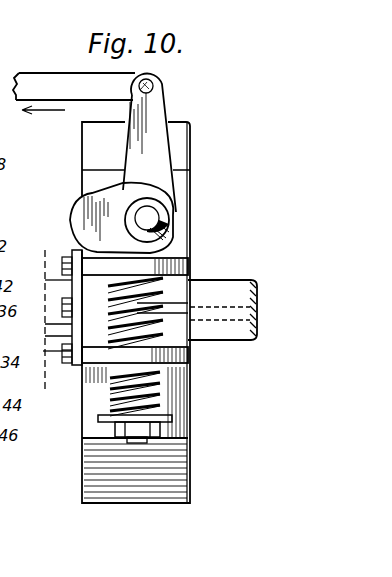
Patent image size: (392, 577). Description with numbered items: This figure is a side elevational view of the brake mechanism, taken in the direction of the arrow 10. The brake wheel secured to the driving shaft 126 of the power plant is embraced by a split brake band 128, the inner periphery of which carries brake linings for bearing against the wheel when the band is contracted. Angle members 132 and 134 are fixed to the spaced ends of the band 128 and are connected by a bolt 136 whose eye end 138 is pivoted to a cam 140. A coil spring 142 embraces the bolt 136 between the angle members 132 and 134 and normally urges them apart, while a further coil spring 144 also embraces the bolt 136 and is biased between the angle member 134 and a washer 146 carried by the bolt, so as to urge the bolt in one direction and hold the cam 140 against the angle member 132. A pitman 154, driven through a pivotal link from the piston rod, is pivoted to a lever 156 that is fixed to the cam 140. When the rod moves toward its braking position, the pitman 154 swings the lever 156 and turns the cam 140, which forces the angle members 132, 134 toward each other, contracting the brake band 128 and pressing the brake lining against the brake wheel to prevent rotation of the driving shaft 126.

The arrow 10 is at (0, 196).
The driving shaft 126 is at (203, 288).
The split brake band 128 is at (182, 149).
The angle member 132 is at (186, 205).
The angle member 134 is at (184, 367).
The bolt 136 is at (186, 320).
The eye end 138 is at (173, 237).
The cam 140 is at (82, 218).
The coil spring 142 is at (163, 302).
The coil spring 144 is at (165, 398).
The washer 146 is at (170, 428).
The pitman 154 is at (54, 80).
The lever 156 is at (156, 110).